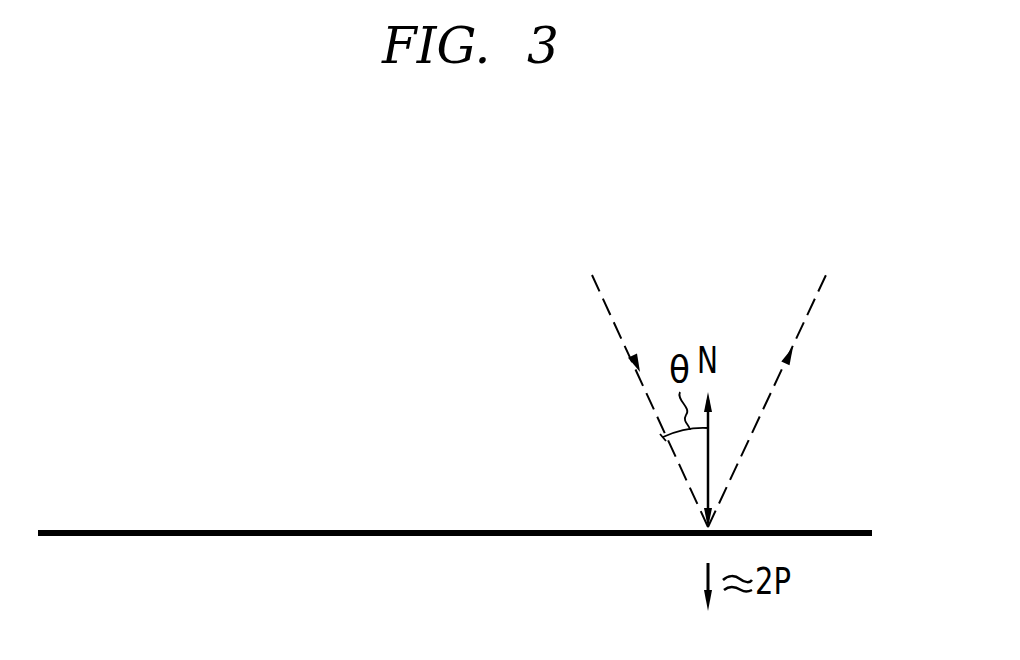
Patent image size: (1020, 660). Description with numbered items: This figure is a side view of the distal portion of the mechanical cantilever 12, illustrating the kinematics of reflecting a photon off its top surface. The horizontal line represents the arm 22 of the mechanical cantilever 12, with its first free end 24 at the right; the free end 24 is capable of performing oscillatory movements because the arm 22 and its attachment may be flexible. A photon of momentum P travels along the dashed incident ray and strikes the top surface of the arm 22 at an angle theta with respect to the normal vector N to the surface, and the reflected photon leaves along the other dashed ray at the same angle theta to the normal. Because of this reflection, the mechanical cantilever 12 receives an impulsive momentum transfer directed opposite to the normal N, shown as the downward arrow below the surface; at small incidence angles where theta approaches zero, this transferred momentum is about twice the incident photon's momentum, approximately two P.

The mechanical cantilever 12 is at (308, 357).
The arm 22 is at (392, 536).
The first free end 24 is at (847, 531).